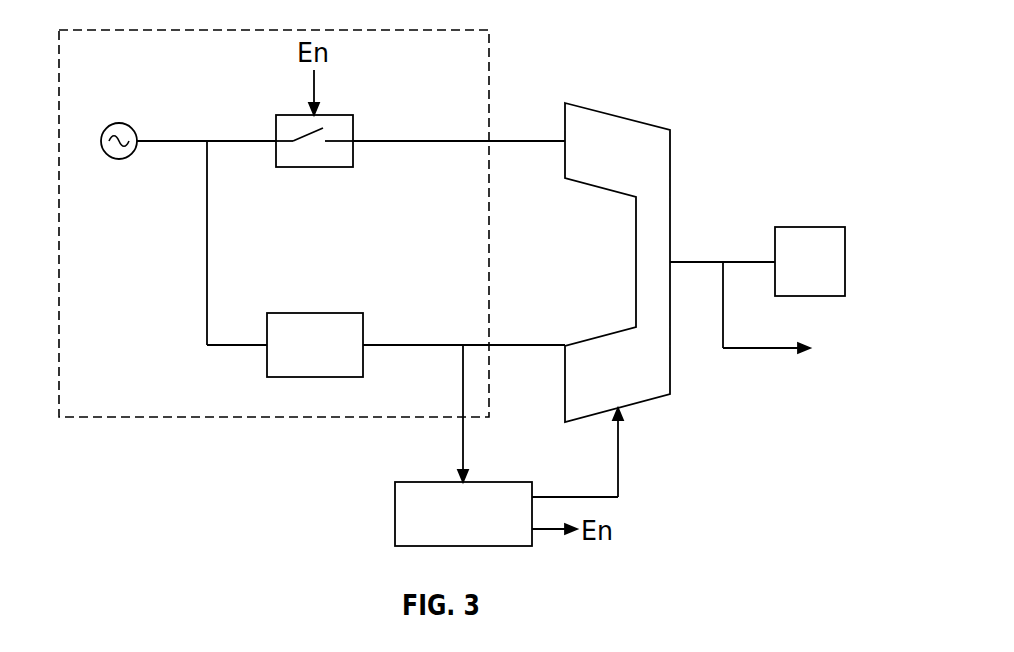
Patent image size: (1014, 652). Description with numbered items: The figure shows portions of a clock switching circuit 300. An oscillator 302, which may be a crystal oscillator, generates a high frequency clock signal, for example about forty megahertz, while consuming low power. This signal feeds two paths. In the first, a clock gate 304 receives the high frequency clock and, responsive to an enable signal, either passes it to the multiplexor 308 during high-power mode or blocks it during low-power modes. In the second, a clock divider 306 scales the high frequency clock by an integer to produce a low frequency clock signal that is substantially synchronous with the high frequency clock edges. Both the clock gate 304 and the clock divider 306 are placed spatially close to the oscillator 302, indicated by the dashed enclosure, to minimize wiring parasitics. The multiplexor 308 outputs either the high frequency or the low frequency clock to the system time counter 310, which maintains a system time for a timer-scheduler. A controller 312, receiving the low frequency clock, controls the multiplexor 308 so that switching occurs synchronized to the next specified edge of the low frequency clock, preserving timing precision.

The clock switching circuit 300 is at (735, 60).
The oscillator 302 is at (120, 123).
The clock gate 304 is at (293, 115).
The clock divider 306 is at (314, 313).
The multiplexor 308 is at (618, 114).
The system time counter 310 is at (811, 227).
The controller 312 is at (431, 482).